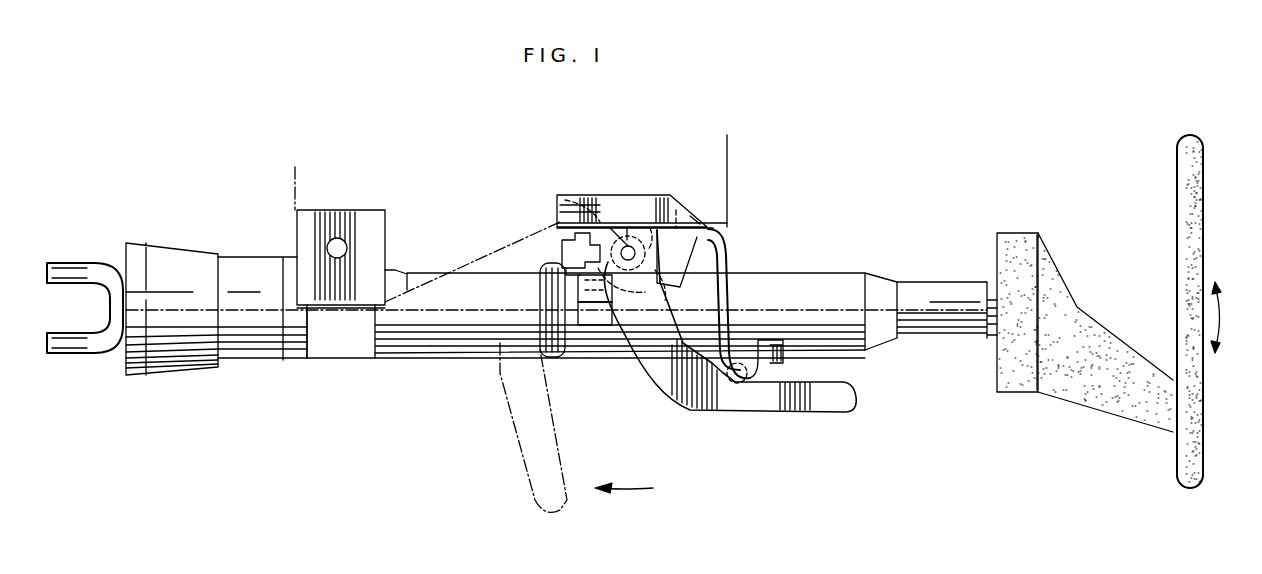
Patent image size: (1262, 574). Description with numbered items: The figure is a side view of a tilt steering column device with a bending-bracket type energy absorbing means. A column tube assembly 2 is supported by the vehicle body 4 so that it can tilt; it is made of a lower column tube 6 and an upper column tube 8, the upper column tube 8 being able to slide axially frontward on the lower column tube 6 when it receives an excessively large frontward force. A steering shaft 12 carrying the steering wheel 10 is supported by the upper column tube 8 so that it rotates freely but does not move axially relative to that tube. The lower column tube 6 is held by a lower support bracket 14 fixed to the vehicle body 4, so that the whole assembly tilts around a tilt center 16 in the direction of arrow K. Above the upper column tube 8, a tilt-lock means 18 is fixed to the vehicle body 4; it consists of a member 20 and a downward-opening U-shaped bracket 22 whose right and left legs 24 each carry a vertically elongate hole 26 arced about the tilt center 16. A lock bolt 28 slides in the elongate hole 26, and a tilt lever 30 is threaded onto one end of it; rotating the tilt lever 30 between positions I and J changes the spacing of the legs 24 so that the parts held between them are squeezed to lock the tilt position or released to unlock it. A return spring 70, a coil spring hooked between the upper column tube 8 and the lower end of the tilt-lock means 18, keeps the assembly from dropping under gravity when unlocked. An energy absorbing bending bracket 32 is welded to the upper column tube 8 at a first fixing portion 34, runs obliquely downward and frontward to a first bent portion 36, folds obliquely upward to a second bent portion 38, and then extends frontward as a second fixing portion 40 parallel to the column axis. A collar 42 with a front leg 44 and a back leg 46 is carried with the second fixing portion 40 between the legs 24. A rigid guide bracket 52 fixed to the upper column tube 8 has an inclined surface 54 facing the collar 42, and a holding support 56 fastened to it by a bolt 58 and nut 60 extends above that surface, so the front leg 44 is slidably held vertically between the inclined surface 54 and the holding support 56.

The column tube assembly 2 is at (460, 360).
The vehicle body 4 is at (727, 170).
The lower column tube 6 is at (135, 366).
The upper column tube 8 is at (400, 347).
The steering wheel 10 is at (1177, 165).
The steering shaft 12 is at (992, 290).
The lower support bracket 14 is at (338, 212).
The tilt center 16 is at (345, 250).
The tilt-lock means 18 is at (692, 216).
The member 20 is at (565, 193).
The U-shaped bracket 22 is at (565, 218).
The leg 24 is at (668, 292).
The elongate hole 26 is at (630, 224).
The lock bolt 28 is at (612, 226).
The tilt lever 30 is at (850, 395).
The energy absorbing bending bracket 32 is at (724, 296).
The first fixing portion 34 is at (784, 357).
The first bent portion 36 is at (736, 384).
The second bent portion 38 is at (728, 230).
The second fixing portion 40 is at (655, 228).
The collar 42 is at (654, 258).
The front leg 44 is at (595, 290).
The back leg 46 is at (680, 210).
The guide bracket 52 is at (596, 326).
The inclined surface 54 is at (640, 290).
The holding support 56 is at (570, 210).
The bolt 58 is at (563, 242).
The nut 60 is at (562, 257).
The return spring 70 is at (538, 290).
The tilt lever position I is at (778, 405).
The tilt lever position J is at (557, 502).
The tilt direction arrow K is at (1222, 315).